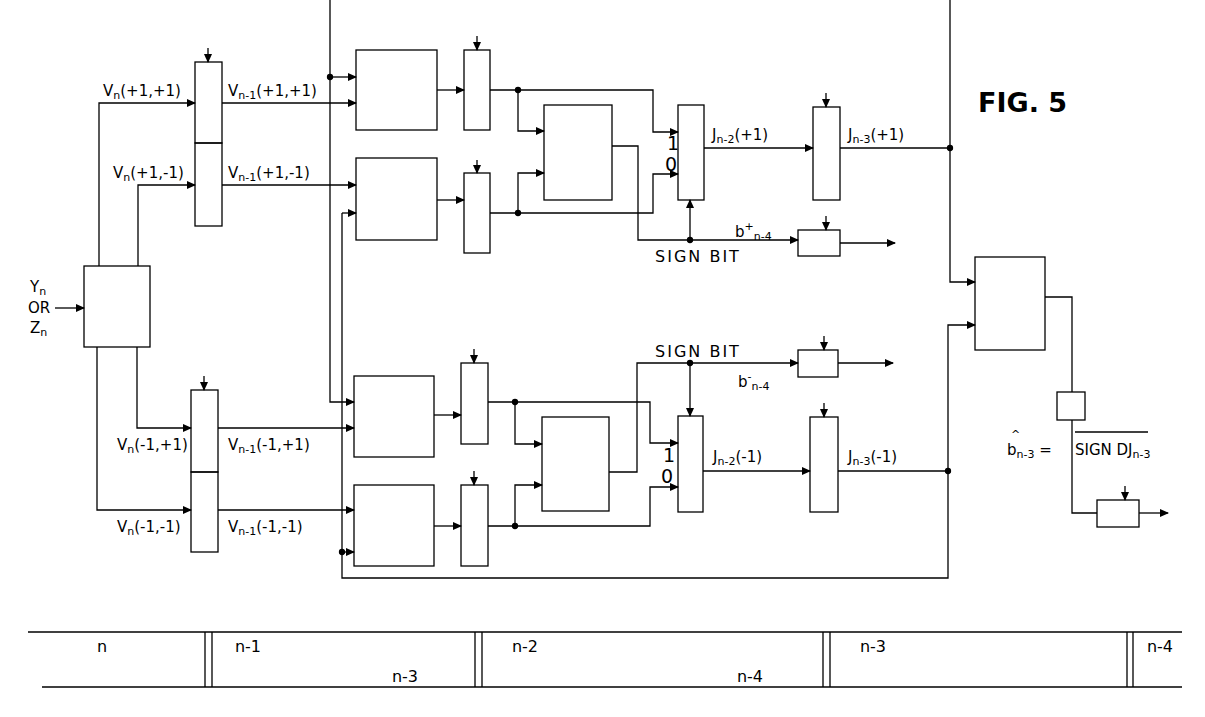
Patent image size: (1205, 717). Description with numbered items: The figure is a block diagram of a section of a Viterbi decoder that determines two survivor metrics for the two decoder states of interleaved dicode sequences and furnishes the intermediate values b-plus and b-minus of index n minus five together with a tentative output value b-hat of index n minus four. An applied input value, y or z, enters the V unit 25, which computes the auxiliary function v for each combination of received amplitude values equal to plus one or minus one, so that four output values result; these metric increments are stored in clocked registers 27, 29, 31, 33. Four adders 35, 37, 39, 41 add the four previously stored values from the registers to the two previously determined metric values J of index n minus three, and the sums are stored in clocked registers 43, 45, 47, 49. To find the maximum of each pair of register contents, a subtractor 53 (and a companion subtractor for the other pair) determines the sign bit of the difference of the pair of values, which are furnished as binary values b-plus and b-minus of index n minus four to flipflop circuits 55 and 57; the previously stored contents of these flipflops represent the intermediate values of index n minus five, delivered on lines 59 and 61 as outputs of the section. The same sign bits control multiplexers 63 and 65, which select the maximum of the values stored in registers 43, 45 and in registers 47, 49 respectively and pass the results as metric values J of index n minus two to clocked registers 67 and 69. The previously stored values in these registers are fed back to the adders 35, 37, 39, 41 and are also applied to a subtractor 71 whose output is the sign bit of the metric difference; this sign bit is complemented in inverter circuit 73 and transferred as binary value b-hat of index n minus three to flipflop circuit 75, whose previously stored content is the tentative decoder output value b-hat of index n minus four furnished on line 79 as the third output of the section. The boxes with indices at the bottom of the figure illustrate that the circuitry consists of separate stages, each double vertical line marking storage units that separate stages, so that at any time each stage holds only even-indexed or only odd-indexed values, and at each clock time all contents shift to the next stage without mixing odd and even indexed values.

The V unit 25 is at (150, 300).
The clocked register 27 is at (222, 127).
The clocked register 29 is at (222, 213).
The clocked register 31 is at (218, 403).
The clocked register 33 is at (210, 552).
The adder 35 is at (396, 38).
The adder 37 is at (383, 158).
The adder 39 is at (388, 376).
The adder 41 is at (383, 485).
The clocked register 43 is at (490, 62).
The clocked register 45 is at (490, 240).
The clocked register 47 is at (488, 380).
The clocked register 49 is at (488, 553).
The subtractor 53 is at (583, 417).
The flipflop circuit 55 is at (840, 230).
The flipflop circuit 57 is at (583, 105).
The line 59 is at (876, 246).
The line 61 is at (876, 366).
The multiplexer 63 is at (695, 105).
The multiplexer 65 is at (690, 512).
The clocked register 67 is at (840, 120).
The clocked register 69 is at (827, 512).
The subtractor 71 is at (1000, 257).
The inverter circuit 73 is at (1085, 400).
The flipflop circuit 75 is at (1113, 527).
The line 79 is at (1145, 512).